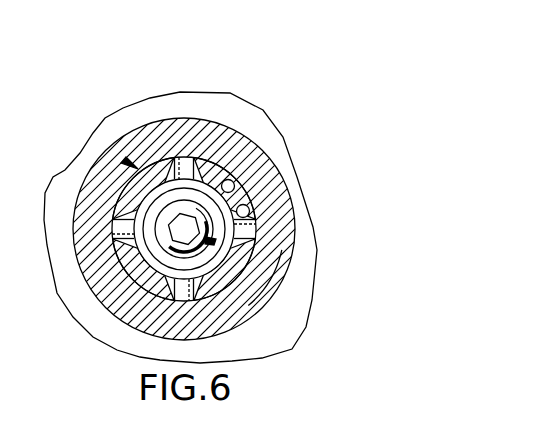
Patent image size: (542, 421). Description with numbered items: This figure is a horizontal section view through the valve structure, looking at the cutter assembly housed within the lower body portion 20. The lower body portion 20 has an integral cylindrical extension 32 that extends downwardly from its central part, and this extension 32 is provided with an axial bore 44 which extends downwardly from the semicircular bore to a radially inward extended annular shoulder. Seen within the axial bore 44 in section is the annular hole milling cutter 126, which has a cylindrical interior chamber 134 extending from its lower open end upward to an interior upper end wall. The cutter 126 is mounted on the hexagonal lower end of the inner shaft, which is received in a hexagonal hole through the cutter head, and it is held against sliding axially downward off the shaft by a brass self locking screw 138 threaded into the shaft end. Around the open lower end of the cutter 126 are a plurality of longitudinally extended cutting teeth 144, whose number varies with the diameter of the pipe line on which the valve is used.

The lower body portion 20 is at (291, 289).
The integral extension 32 is at (266, 301).
The axial bore 44 is at (284, 212).
The cutting teeth 144 is at (190, 162).
The annular hole milling cutter 126 is at (130, 162).
The cylindrical interior chamber 134 is at (228, 180).
The self locking screw 138 is at (210, 241).